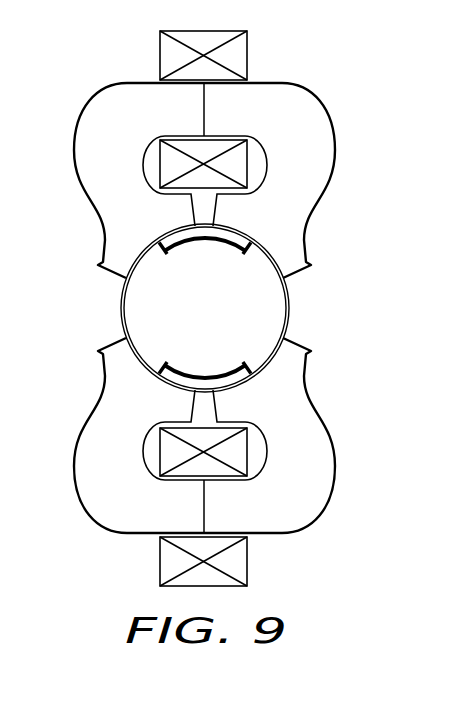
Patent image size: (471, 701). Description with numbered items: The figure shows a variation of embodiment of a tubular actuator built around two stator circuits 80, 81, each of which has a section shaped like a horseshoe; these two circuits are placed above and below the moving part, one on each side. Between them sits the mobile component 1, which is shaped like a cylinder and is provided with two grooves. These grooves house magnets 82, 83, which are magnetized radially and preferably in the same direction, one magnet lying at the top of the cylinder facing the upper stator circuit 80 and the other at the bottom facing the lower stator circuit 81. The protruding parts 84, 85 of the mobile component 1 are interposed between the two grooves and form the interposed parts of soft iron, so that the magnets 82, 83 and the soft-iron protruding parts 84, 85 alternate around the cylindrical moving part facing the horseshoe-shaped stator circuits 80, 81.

The mobile component 1 is at (350, 337).
The stator circuit 80 is at (277, 112).
The stator circuit 81 is at (325, 461).
The magnet 82 is at (172, 239).
The magnet 83 is at (233, 381).
The protruding part 84 is at (268, 311).
The protruding part 85 is at (140, 313).